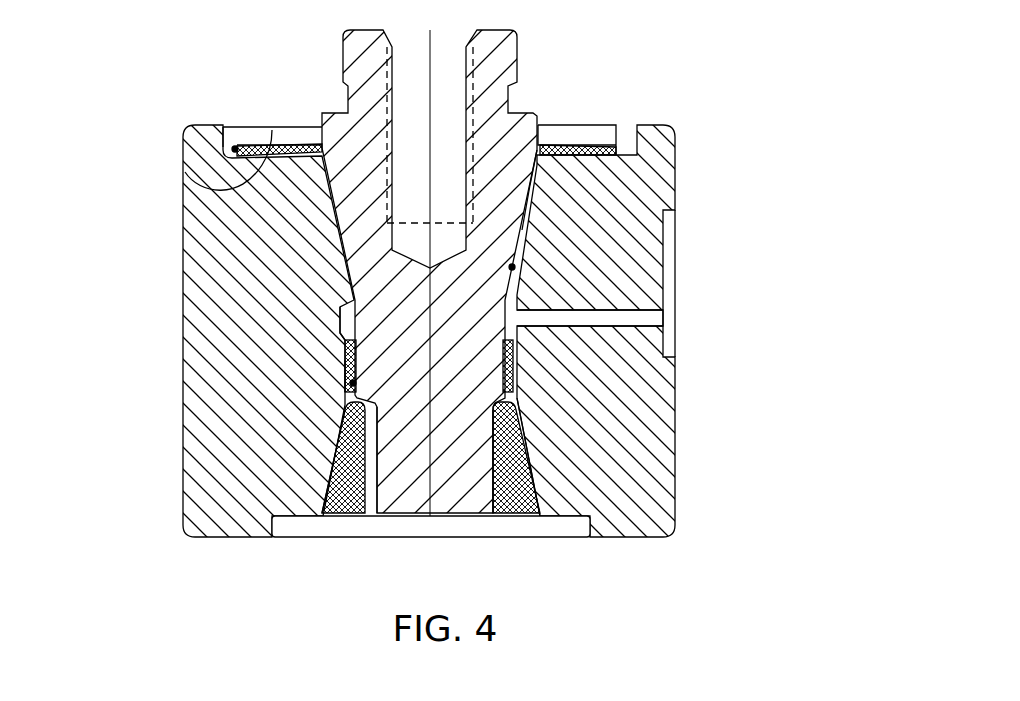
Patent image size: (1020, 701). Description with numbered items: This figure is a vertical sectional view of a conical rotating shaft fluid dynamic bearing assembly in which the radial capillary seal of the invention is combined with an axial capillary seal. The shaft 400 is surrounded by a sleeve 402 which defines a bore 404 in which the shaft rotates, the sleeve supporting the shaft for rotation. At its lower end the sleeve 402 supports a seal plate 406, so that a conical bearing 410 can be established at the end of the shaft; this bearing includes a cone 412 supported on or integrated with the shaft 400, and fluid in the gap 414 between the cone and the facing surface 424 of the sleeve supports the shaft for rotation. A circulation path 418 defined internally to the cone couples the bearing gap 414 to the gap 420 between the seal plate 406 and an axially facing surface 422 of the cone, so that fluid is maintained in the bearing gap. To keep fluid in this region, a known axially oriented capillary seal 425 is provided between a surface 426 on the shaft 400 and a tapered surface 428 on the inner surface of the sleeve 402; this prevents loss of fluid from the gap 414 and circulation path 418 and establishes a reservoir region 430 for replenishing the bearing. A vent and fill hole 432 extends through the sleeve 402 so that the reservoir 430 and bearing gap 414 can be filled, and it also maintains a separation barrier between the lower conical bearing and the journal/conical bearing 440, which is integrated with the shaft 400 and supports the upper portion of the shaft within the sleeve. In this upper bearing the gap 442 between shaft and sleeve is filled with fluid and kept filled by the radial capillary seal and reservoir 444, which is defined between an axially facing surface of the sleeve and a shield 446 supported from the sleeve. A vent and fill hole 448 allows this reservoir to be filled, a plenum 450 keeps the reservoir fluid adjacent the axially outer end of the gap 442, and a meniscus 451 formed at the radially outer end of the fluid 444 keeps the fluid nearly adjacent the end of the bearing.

The shaft 400 is at (445, 505).
The sleeve 402 is at (650, 408).
The bore 404 is at (512, 267).
The seal plate 406 is at (302, 527).
The conical bearing 410 is at (527, 460).
The cone 412 is at (510, 497).
The bearing gap 414 is at (353, 463).
The circulation path 418 is at (370, 505).
The gap 420 is at (339, 510).
The axially facing surface 422 is at (527, 510).
The facing surface 424 is at (537, 492).
The axially oriented capillary seal 425 is at (347, 357).
The surface 426 is at (353, 383).
The tapered surface 428 is at (345, 368).
The reservoir region 430 is at (343, 340).
The vent and fill hole 432 is at (670, 316).
The journal/conical bearing 440 is at (520, 230).
The gap 442 is at (520, 178).
The radial capillary seal and reservoir 444 is at (185, 172).
The shield 446 is at (290, 121).
The vent and fill hole 448 is at (635, 121).
The plenum 450 is at (640, 145).
The meniscus 451 is at (235, 148).